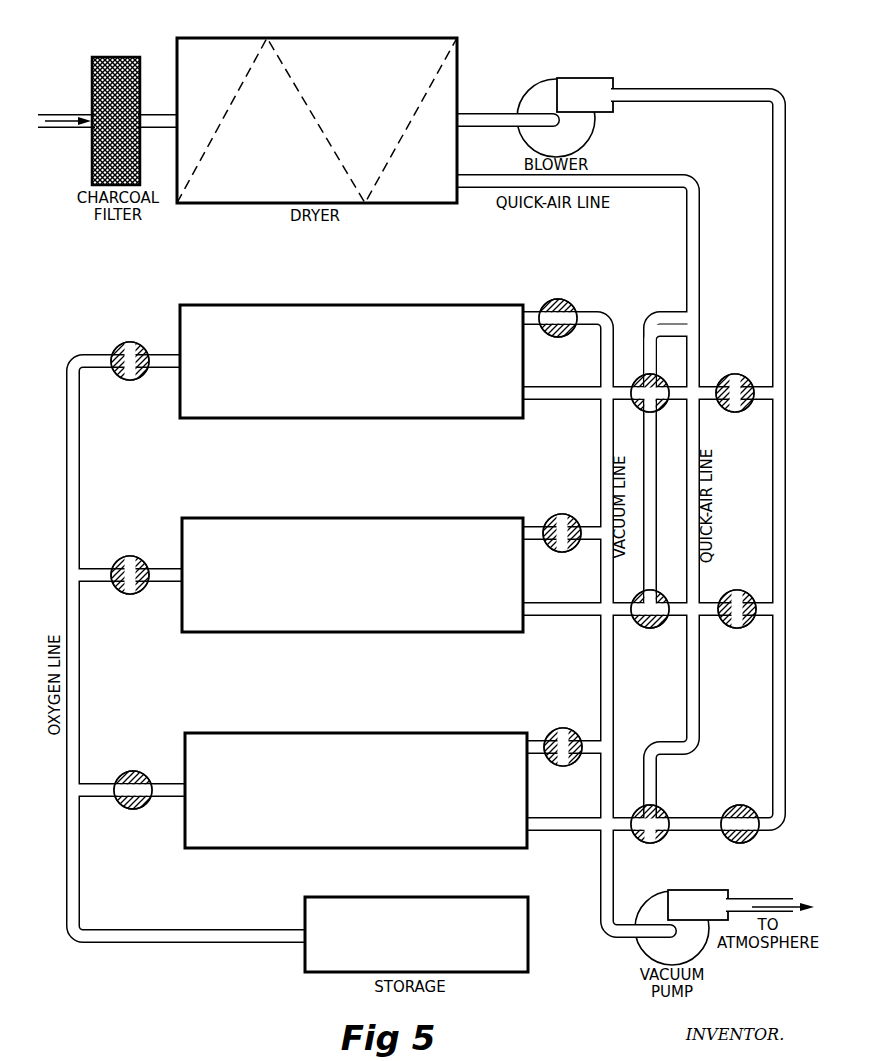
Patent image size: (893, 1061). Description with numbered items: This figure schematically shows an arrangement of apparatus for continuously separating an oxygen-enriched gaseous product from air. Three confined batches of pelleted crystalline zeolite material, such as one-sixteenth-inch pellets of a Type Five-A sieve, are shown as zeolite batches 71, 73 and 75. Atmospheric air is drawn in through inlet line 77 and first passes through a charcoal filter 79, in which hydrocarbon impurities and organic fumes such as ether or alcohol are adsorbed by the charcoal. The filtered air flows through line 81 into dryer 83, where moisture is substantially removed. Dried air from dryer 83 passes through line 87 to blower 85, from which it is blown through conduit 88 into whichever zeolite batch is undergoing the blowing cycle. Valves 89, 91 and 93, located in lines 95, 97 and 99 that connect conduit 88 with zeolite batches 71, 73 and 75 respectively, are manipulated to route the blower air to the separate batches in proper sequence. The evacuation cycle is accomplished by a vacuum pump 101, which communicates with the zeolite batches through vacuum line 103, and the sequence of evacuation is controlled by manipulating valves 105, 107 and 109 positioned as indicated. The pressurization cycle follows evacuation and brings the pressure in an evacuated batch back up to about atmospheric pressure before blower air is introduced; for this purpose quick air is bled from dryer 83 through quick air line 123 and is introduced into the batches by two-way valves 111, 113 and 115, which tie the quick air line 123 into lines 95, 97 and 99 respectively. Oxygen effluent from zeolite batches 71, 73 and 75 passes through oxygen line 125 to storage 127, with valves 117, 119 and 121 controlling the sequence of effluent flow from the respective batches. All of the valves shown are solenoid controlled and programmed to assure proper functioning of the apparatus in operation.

The confined zeolite batch 71 is at (342, 373).
The confined zeolite batch 73 is at (342, 588).
The confined zeolite batch 75 is at (342, 803).
The inlet line 77 is at (92, 117).
The charcoal filter 79 is at (104, 106).
The line 81 is at (177, 118).
The dryer 83 is at (262, 130).
The blower 85 is at (566, 103).
The line 87 is at (510, 118).
The conduit 88 is at (786, 253).
The valve 89 is at (745, 376).
The valve 91 is at (748, 591).
The valve 93 is at (744, 806).
The line 95 is at (585, 399).
The line 97 is at (584, 616).
The line 99 is at (594, 831).
The vacuum pump 101 is at (668, 915).
The vacuum line 103 is at (613, 688).
The valve 105 is at (572, 304).
The valve 107 is at (575, 514).
The valve 109 is at (577, 728).
The two-way valve 111 is at (662, 410).
The two-way valve 113 is at (664, 618).
The two-way valve 115 is at (661, 806).
The valve 117 is at (142, 352).
The valve 119 is at (145, 566).
The valve 121 is at (145, 776).
The quick air line 123 is at (700, 253).
The oxygen line 125 is at (80, 466).
The storage 127 is at (394, 945).